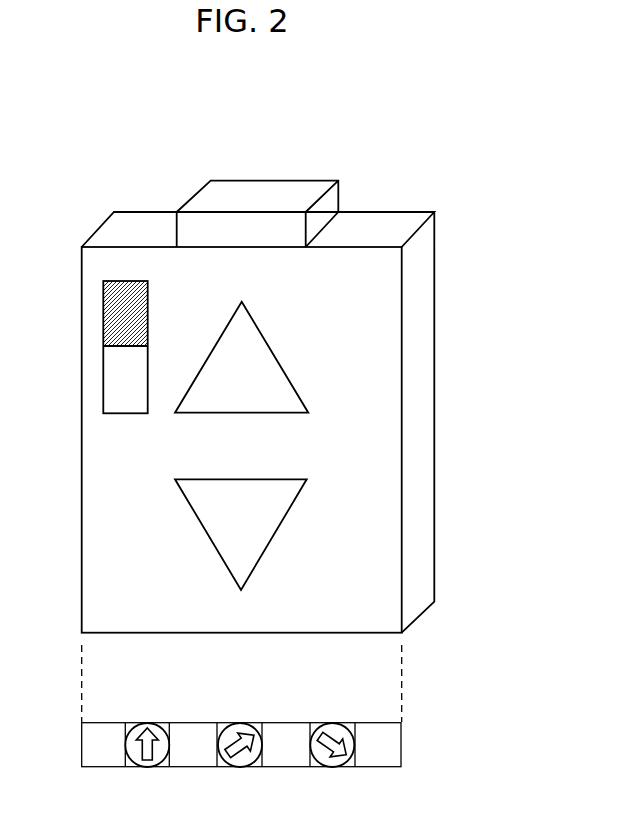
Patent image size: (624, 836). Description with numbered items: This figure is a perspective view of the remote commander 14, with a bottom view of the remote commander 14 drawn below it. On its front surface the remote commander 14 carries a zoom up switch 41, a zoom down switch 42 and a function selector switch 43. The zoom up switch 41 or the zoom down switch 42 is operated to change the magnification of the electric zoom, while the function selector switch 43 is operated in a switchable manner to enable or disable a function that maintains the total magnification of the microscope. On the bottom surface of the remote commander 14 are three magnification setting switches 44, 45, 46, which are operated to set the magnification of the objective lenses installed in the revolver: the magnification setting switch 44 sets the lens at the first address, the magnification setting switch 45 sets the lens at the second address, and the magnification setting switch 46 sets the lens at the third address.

The remote commander 14 is at (483, 179).
The zoom up switch 41 is at (276, 358).
The zoom down switch 42 is at (273, 535).
The function selector switch 43 is at (103, 380).
The magnification setting switch 44 is at (148, 767).
The magnification setting switch 45 is at (240, 767).
The magnification setting switch 46 is at (334, 767).